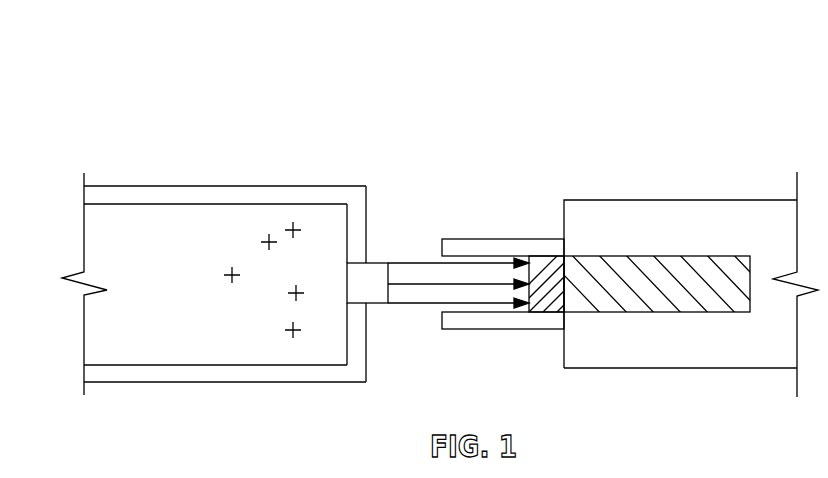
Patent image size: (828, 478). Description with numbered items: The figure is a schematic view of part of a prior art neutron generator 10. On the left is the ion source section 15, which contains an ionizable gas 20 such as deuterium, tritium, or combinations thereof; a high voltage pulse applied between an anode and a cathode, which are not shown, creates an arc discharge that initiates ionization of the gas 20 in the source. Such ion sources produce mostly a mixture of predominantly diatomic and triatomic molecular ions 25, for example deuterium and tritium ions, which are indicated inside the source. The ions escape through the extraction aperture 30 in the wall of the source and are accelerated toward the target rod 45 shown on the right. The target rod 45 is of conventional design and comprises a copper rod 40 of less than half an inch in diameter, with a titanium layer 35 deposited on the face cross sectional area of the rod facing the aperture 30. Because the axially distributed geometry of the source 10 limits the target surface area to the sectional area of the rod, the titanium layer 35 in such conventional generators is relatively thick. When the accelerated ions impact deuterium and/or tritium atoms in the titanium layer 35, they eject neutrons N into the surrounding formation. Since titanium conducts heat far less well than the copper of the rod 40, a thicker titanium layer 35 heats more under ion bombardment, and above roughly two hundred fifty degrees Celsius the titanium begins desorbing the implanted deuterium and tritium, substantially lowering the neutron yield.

The neutron generator 10 is at (424, 217).
The ion source section 15 is at (225, 185).
The ionizable gas 20 is at (137, 222).
The molecular ions 25 is at (290, 227).
The extraction aperture 30 is at (366, 263).
The titanium layer 35 is at (549, 263).
The copper rod 40 is at (690, 256).
The target rod 45 is at (632, 232).
The neutrons N is at (545, 265).